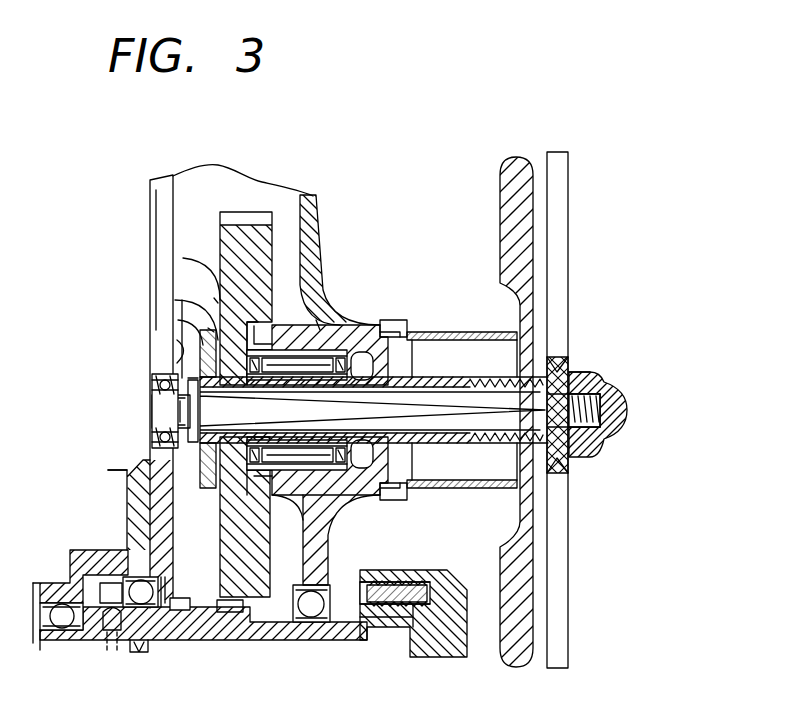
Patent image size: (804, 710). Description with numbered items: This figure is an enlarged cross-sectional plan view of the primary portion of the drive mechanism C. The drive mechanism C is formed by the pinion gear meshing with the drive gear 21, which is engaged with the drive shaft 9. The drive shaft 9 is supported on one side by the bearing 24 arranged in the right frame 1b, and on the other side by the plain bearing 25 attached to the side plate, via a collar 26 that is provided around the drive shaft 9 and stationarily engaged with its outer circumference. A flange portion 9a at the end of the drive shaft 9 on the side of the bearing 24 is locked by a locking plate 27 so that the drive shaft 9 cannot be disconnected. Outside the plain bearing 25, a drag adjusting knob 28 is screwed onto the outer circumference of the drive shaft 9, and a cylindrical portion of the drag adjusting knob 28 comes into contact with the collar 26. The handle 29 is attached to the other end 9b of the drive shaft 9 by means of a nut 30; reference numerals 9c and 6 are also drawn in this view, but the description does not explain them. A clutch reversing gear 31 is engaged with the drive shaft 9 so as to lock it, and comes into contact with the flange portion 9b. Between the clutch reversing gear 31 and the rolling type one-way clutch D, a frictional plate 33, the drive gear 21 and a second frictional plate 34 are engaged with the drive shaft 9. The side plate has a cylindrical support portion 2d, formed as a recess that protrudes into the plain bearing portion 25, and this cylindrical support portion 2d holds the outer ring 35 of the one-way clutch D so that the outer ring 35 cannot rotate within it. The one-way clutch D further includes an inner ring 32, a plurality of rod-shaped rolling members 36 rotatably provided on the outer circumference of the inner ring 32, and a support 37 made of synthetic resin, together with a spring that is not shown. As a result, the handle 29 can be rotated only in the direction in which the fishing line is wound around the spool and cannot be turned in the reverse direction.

The right frame 1b is at (155, 188).
The drive gear 21 is at (249, 213).
The outer ring 35 is at (280, 330).
The rod-shaped rolling members 36 is at (312, 320).
The rolling type one-way clutch D is at (313, 343).
The plain bearing 25 is at (408, 320).
The inner ring 32 is at (332, 345).
The collar 26 is at (424, 365).
The drive shaft 9 is at (450, 366).
The drag adjusting knob 28 is at (530, 187).
The handle 29 is at (566, 235).
The shaft threaded end 9c is at (594, 373).
The nut 30 is at (628, 411).
The frictional plate 33 is at (222, 248).
The frictional plate 34 is at (218, 300).
The clutch reversing gear 31 is at (212, 332).
The flange portion 9b is at (177, 320).
The locking plate 27 is at (152, 337).
The bearing 24 is at (152, 373).
The flange portion 9a is at (160, 410).
The housing 6 is at (100, 469).
The support 37 is at (230, 455).
The drive mechanism C is at (205, 538).
The cylindrical support portion 2d is at (326, 476).